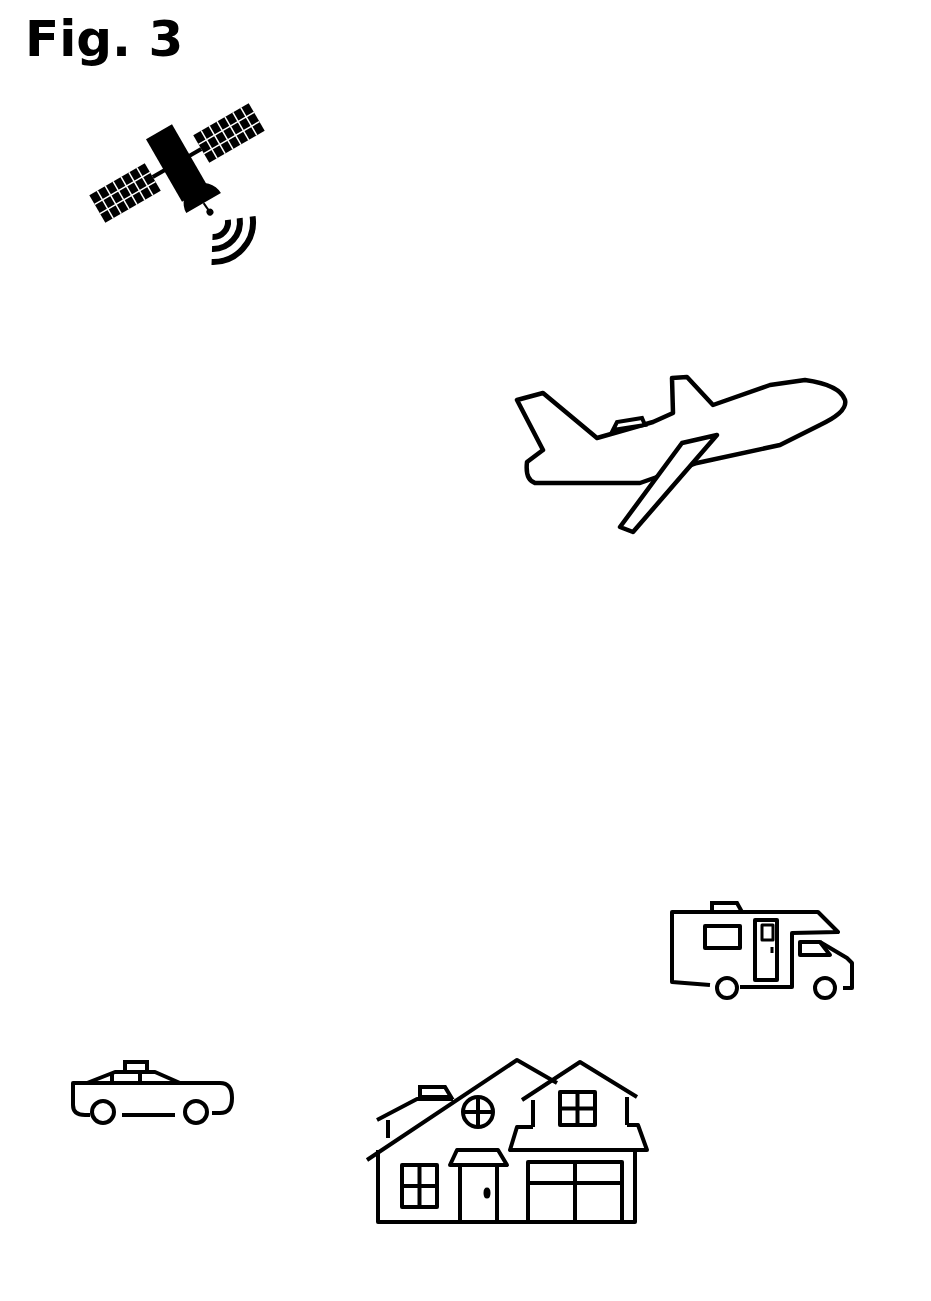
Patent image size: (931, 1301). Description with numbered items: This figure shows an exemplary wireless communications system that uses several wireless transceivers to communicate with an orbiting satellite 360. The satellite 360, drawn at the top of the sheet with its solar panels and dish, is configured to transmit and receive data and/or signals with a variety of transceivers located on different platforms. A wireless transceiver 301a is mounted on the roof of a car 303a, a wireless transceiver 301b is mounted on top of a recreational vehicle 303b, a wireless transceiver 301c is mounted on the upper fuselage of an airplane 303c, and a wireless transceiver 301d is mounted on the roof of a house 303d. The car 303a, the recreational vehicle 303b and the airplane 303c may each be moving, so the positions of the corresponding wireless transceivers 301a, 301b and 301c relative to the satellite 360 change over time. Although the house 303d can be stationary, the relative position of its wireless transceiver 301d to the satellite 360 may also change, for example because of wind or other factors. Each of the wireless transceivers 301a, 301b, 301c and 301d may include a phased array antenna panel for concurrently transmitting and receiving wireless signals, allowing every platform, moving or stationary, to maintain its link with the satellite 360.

The satellite 360 is at (152, 130).
The wireless transceiver 301a is at (147, 1049).
The wireless transceiver 301b is at (720, 891).
The wireless transceiver 301c is at (621, 411).
The wireless transceiver 301d is at (429, 1077).
The car 303a is at (76, 1080).
The recreational vehicle 303b is at (822, 913).
The airplane 303c is at (823, 387).
The house 303d is at (645, 1128).